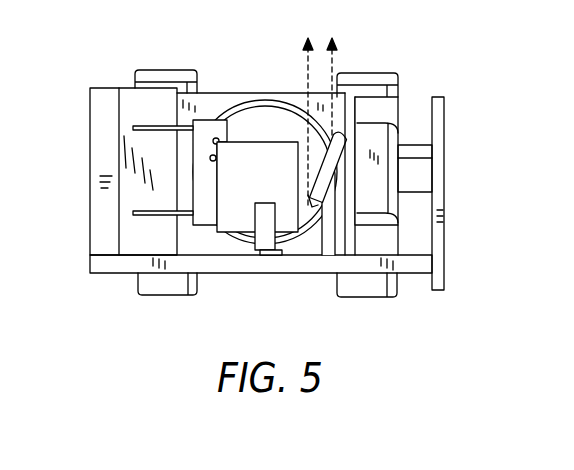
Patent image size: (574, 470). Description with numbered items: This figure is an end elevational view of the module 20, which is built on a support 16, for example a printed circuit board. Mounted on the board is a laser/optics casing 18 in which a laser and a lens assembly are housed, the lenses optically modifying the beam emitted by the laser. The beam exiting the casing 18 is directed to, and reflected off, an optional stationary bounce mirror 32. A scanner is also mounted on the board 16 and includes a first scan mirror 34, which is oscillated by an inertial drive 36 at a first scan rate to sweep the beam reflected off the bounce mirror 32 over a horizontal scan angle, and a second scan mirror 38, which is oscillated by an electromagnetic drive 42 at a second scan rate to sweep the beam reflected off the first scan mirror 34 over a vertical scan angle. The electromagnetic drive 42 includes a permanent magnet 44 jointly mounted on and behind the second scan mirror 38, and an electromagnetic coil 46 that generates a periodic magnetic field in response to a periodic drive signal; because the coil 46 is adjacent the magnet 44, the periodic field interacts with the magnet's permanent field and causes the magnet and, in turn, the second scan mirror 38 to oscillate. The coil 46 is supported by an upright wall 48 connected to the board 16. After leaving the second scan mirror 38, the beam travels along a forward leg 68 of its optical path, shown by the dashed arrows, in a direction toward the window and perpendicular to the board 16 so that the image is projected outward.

The support 16 is at (100, 263).
The laser/optics casing 18 is at (208, 102).
The module 20 is at (435, 70).
The bounce mirror 32 is at (232, 227).
The first scan mirror 34 is at (205, 172).
The inertial drive 36 is at (135, 107).
The second scan mirror 38 is at (317, 196).
The electromagnetic drive 42 is at (401, 191).
The permanent magnet 44 is at (338, 178).
The electromagnetic coil 46 is at (377, 142).
The upright wall 48 is at (442, 120).
The forward leg 68 is at (303, 117).